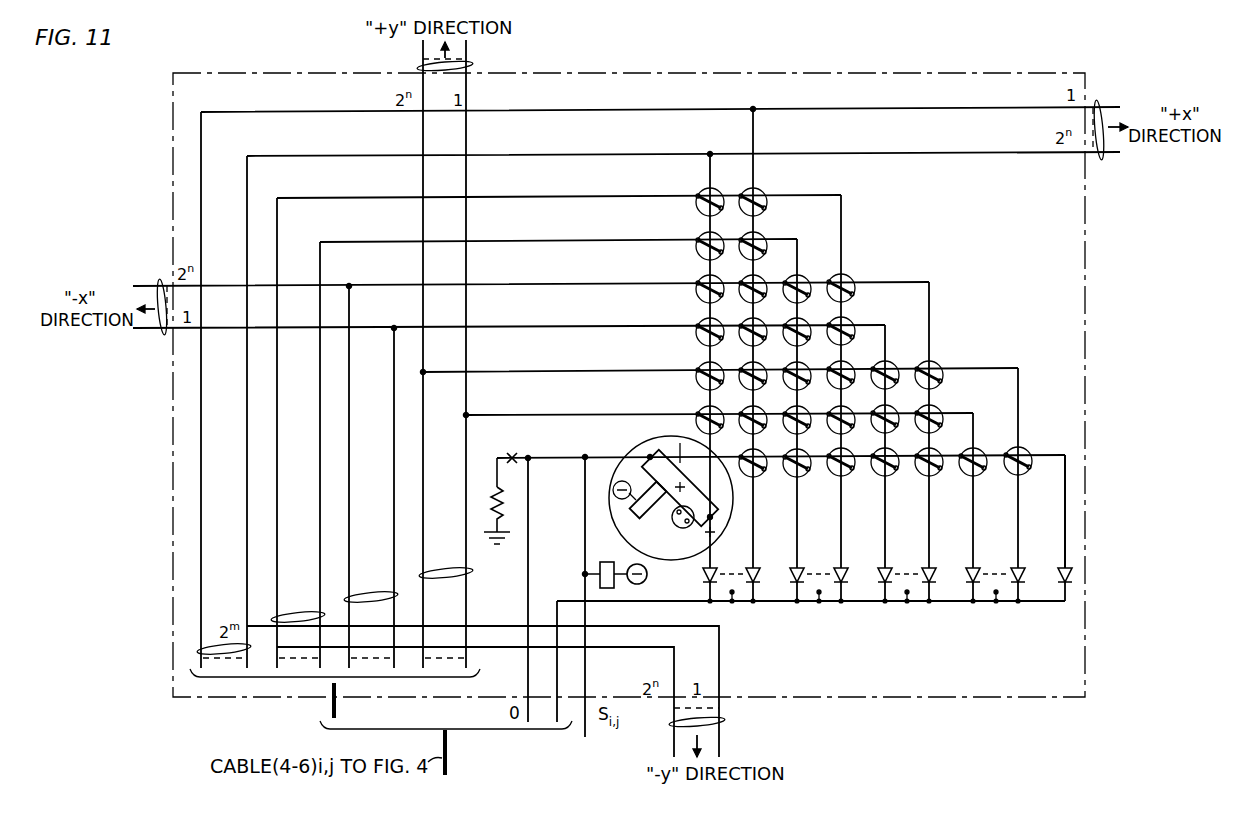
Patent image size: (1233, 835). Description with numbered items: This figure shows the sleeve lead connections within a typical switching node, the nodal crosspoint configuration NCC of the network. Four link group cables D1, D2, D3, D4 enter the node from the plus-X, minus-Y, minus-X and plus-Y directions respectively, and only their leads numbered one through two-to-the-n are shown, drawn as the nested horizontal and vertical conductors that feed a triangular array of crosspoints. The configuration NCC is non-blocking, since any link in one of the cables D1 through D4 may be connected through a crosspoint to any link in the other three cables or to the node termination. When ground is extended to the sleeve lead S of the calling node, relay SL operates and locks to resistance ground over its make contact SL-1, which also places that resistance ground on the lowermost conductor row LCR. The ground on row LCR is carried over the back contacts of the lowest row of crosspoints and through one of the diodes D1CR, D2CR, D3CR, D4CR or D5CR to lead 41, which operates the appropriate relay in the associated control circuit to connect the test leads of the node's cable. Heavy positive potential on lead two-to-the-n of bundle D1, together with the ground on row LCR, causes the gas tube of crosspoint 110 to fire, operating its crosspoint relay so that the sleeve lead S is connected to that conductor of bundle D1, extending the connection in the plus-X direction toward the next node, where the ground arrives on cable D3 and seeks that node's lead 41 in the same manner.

The crosspoint 110 is at (640, 450).
The lead 41 is at (1007, 603).
The nodal crosspoint configuration NCC is at (728, 73).
The link group cable D1 is at (1101, 106).
The link group cable D2 is at (720, 722).
The link group cable D3 is at (159, 288).
The link group cable D4 is at (471, 68).
The diode D1CR is at (736, 563).
The diode D2CR is at (820, 553).
The diode D3CR is at (907, 553).
The diode D4CR is at (996, 553).
The diode DSCR D5CR is at (1054, 563).
The lowermost conductor row LCR is at (1040, 457).
The sleeve relay SL is at (616, 564).
The make contact SL-1 is at (506, 487).